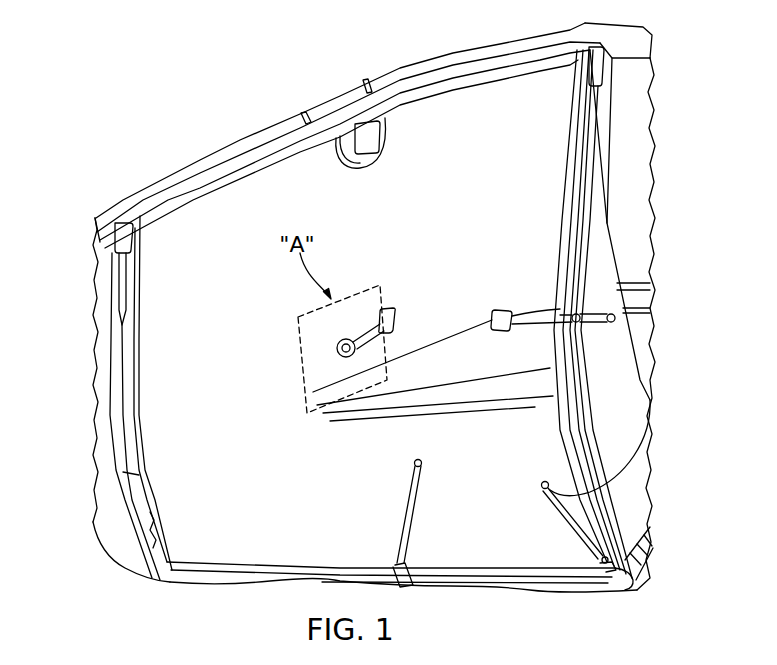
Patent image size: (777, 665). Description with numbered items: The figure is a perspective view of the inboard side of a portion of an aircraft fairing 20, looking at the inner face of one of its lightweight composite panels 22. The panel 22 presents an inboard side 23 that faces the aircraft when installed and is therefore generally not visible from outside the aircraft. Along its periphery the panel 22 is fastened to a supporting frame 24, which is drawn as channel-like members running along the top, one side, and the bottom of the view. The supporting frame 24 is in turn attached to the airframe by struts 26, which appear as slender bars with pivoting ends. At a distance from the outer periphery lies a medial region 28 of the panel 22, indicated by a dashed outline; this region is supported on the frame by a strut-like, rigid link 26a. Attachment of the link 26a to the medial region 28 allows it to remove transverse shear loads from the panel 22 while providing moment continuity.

The aircraft fairing 20 is at (160, 138).
The composite panel 22 is at (460, 117).
The inboard side 23 is at (245, 452).
The supporting frame 24 is at (580, 163).
The struts 26 is at (410, 503).
The rigid link 26a is at (370, 330).
The medial region 28 is at (398, 278).